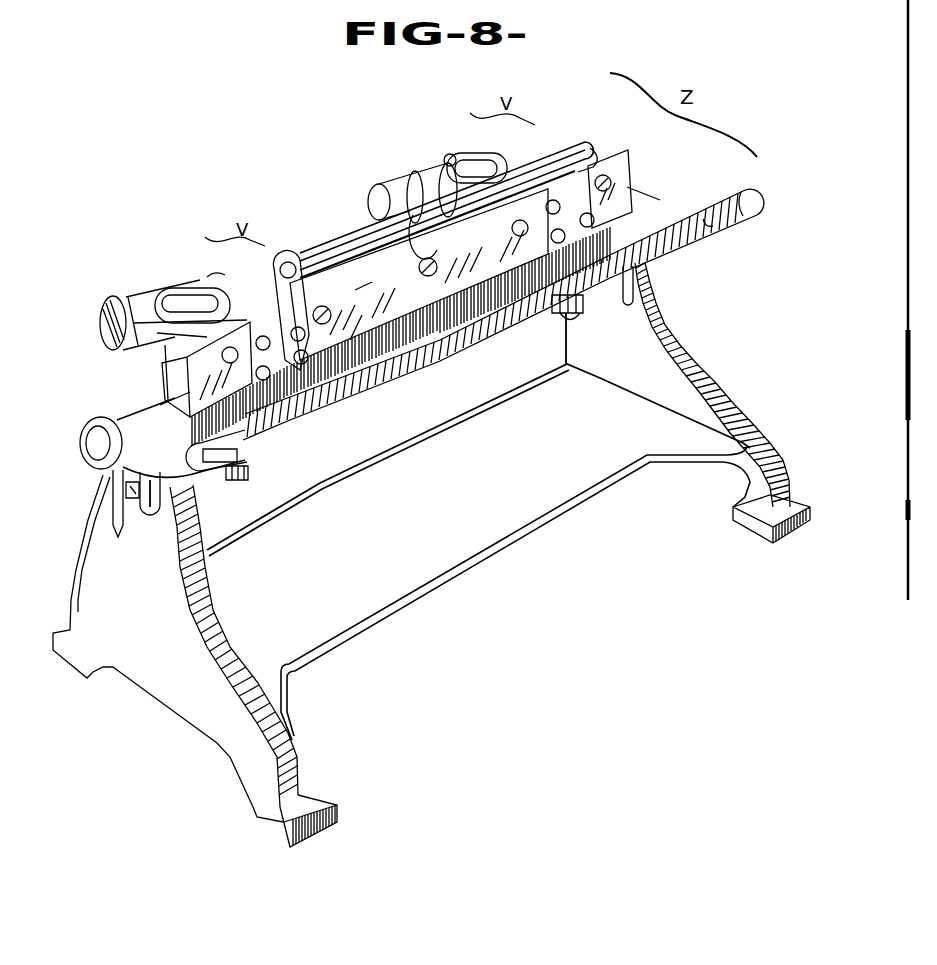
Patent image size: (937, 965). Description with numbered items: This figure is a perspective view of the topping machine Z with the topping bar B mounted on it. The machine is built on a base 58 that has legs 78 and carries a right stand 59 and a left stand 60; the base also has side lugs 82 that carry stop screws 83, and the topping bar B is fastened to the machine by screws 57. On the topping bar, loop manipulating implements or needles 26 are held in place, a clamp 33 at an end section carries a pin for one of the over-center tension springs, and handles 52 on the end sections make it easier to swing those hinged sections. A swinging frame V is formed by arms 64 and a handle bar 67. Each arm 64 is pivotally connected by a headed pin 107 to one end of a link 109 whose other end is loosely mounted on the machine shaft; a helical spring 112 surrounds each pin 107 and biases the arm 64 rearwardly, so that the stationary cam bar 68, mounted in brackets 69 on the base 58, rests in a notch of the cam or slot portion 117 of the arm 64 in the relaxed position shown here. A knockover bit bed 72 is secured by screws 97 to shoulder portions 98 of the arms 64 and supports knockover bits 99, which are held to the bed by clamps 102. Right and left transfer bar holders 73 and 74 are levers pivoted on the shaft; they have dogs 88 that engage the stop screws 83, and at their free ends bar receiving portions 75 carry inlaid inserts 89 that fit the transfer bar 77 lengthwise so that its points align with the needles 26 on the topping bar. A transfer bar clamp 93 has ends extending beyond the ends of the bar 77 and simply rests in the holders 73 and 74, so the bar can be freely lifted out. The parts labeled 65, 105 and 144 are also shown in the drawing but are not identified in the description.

The needles 26 is at (315, 392).
The clamp 33 is at (170, 400).
The handles 52 is at (630, 300).
The screws 57 is at (237, 475).
The base 58 is at (470, 547).
The right stand 59 is at (745, 470).
The left stand 60 is at (290, 737).
The arms 64 is at (555, 140).
The bushing 65 is at (90, 443).
The handle bar 67 is at (537, 160).
The cam bar 68 is at (213, 306).
The brackets 69 is at (312, 253).
The knockover bit bed 72 is at (363, 283).
The right transfer bar holder 73 is at (660, 200).
The left transfer bar holder 74 is at (150, 430).
The bar receiving portions 75 is at (750, 208).
The transfer bar 77 is at (416, 368).
The legs 78 is at (273, 830).
The side lugs 82 is at (117, 493).
The stop screws 83 is at (140, 500).
The dogs 88 is at (107, 482).
The inlaid inserts 89 is at (218, 463).
The transfer bar clamp 93 is at (727, 195).
The screws 97 is at (300, 333).
The shoulder portions 98 is at (260, 360).
The knockover bits 99 is at (369, 326).
The clamps 102 is at (160, 362).
The needle plate 105 is at (442, 274).
The headed pin 107 is at (122, 318).
The link 109 is at (147, 337).
The helical spring 112 is at (418, 171).
The cam or slot portion 117 is at (175, 292).
The lug 144 is at (273, 310).